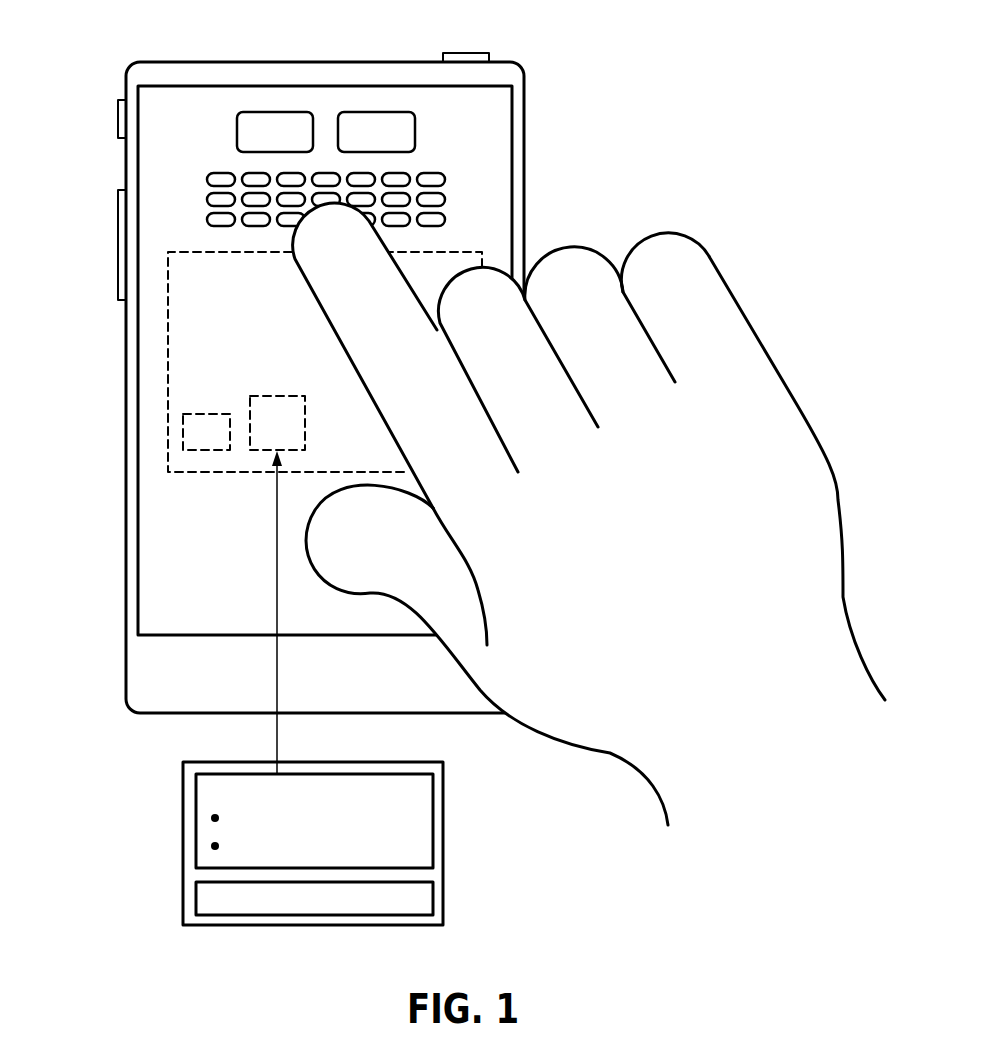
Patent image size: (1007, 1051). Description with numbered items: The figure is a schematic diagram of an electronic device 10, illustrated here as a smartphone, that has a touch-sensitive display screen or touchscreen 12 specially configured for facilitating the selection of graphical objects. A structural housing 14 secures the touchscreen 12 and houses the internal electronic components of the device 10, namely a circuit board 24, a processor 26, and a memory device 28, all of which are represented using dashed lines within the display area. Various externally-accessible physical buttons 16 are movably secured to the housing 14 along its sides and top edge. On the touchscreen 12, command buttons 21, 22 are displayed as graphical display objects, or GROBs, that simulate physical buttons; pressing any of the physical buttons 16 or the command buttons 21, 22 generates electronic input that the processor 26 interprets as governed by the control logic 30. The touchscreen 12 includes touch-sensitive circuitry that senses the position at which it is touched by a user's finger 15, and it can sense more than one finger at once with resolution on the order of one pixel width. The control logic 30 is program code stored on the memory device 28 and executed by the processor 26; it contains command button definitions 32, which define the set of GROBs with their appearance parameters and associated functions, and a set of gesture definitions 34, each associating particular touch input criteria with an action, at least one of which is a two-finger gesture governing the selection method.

The electronic device 10 is at (330, 359).
The touchscreen 12 is at (514, 104).
The housing 14 is at (525, 148).
The finger 15 is at (350, 328).
The physical buttons 16 is at (458, 53).
The command button 21 is at (363, 112).
The command button 22 is at (207, 200).
The circuit board 24 is at (167, 380).
The processor 26 is at (183, 428).
The memory device 28 is at (263, 452).
The control logic 30 is at (183, 806).
The command button definitions 32 is at (196, 850).
The gesture definitions 34 is at (196, 893).